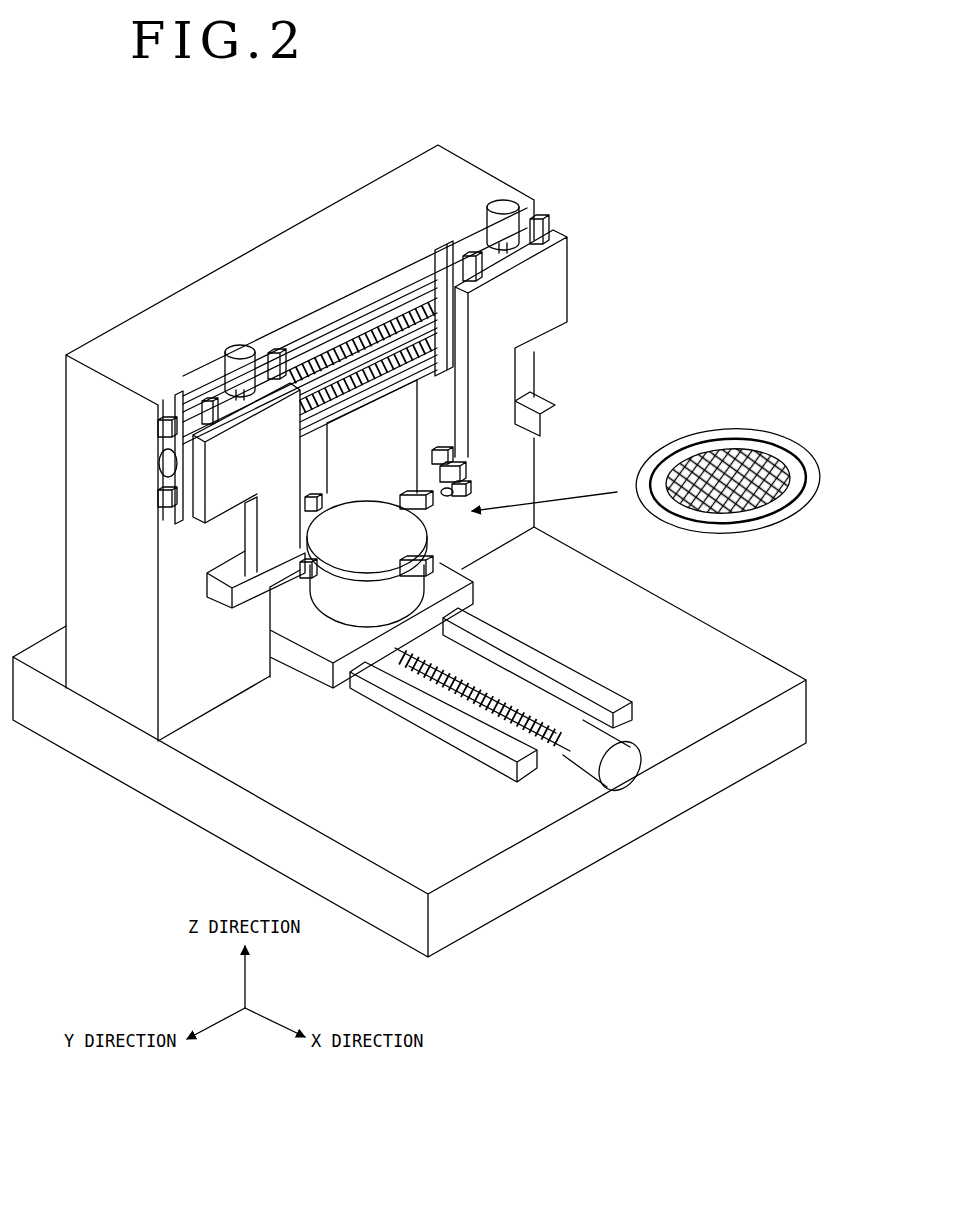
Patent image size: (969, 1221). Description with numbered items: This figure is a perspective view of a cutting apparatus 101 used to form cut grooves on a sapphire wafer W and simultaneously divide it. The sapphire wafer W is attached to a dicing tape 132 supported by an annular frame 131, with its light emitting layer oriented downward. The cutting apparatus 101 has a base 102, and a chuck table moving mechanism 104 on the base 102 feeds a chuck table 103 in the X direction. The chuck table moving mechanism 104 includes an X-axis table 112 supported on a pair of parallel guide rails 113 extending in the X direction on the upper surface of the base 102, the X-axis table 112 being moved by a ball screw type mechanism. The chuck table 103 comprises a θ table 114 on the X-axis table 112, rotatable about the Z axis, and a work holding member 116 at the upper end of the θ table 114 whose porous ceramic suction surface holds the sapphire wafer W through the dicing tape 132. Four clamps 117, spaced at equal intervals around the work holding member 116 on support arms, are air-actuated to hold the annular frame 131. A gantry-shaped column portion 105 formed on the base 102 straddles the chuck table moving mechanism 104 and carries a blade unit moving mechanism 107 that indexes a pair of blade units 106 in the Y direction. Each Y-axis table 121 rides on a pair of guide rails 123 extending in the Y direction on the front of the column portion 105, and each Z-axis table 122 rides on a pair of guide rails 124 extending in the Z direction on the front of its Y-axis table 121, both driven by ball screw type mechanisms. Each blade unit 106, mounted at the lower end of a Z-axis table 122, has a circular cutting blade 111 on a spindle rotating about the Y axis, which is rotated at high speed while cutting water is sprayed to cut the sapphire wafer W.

The cutting apparatus 101 is at (493, 127).
The base 102 is at (738, 655).
The chuck table 103 is at (378, 534).
The chuck table moving mechanism 104 is at (499, 691).
The column portion 105 is at (80, 424).
The blade unit 106 is at (206, 577).
The blade unit moving mechanism 107 is at (568, 200).
The cutting blade 111 is at (445, 498).
The X-axis table 112 is at (450, 577).
The guide rail 113 is at (583, 680).
The θ table 114 is at (332, 612).
The work holding member 116 is at (345, 507).
The clamp 117 is at (366, 515).
The Y-axis table 121 is at (478, 228).
The Z-axis table 122 is at (548, 300).
The guide rail 123 is at (158, 437).
The guide rail 124 is at (538, 205).
The annular frame 131 is at (655, 450).
The dicing tape 132 is at (688, 440).
The sapphire wafer W is at (647, 445).